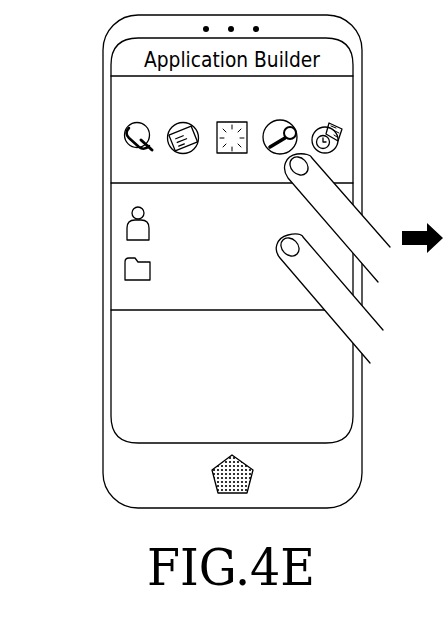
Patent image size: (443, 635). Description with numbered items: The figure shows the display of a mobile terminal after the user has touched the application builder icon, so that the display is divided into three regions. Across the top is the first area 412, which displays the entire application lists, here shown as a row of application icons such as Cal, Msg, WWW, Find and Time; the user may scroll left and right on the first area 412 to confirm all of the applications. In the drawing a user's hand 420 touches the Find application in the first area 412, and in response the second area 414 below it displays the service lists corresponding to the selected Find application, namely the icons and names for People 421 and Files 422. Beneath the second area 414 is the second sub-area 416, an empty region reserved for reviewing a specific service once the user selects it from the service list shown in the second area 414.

The first area 412 is at (125, 162).
The second area 414 is at (188, 247).
The second sub-area 416 is at (125, 375).
The user finger touch input 420 is at (296, 126).
The People 421 is at (204, 223).
The Files 422 is at (193, 270).